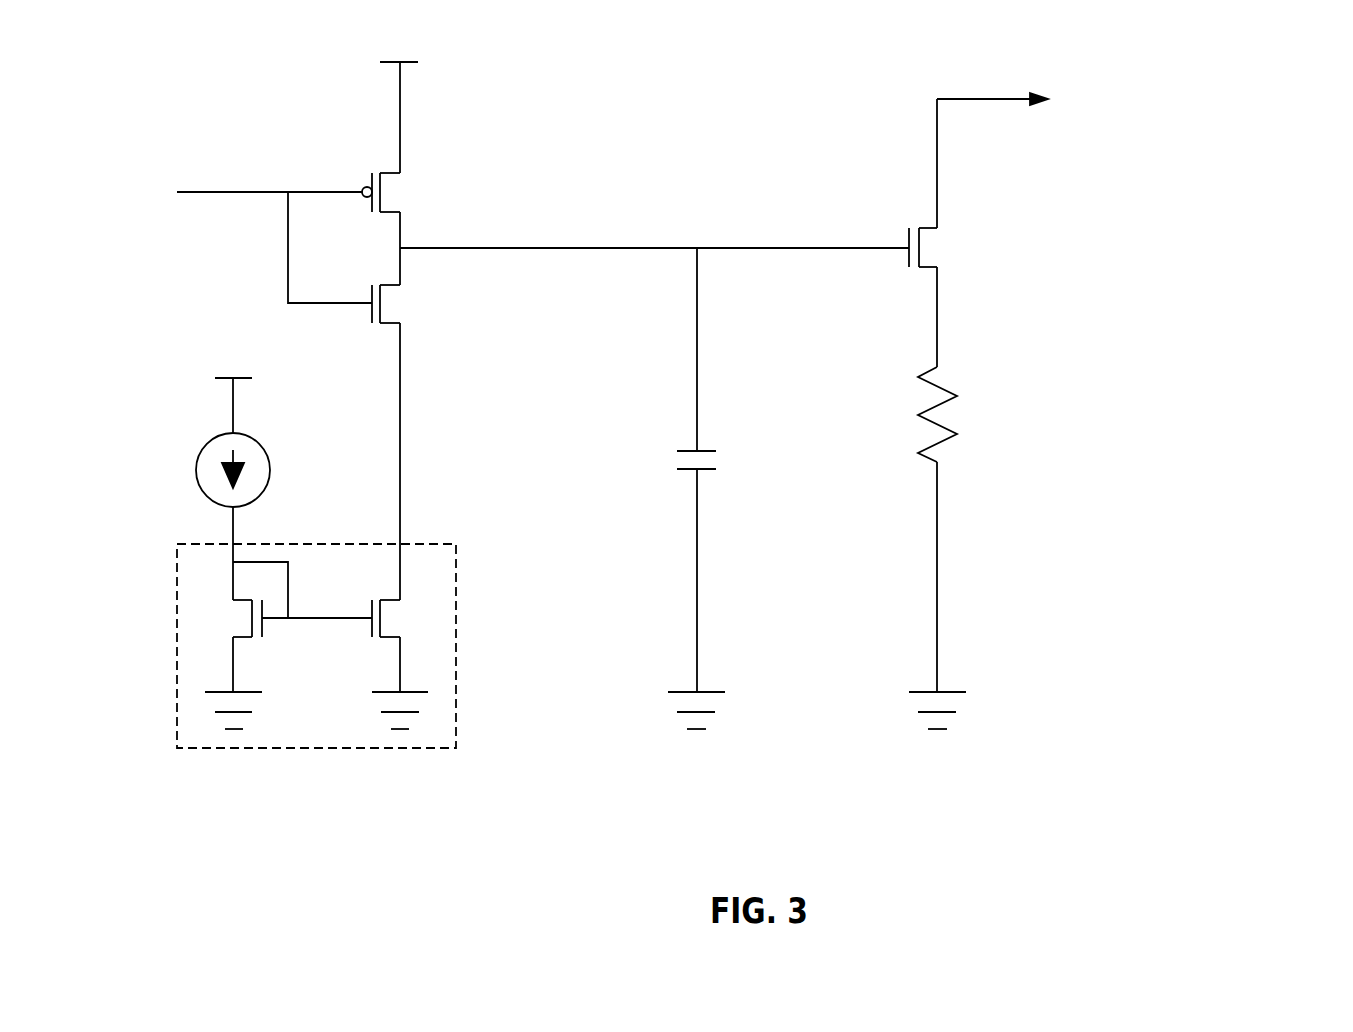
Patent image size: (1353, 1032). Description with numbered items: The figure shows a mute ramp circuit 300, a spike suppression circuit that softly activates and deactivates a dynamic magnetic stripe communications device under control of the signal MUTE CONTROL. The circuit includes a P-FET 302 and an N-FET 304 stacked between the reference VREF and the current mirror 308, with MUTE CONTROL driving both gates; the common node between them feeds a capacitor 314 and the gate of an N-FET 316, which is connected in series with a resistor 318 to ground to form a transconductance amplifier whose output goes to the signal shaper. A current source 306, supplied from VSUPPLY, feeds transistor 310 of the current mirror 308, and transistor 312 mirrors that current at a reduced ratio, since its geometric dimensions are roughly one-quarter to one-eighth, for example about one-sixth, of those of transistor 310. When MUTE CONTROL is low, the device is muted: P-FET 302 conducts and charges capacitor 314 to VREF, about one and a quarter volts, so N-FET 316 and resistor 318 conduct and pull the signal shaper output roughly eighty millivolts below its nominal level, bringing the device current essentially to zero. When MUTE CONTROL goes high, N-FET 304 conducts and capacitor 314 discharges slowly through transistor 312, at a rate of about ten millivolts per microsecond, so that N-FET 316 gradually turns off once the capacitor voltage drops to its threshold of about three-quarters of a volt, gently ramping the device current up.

The mute ramp circuit 300 is at (1323, 409).
The P-FET 302 is at (395, 173).
The N-FET 304 is at (387, 283).
The current source 306 is at (203, 447).
The current mirror 308 is at (370, 544).
The transistor 310 is at (244, 635).
The transistor 312 is at (385, 598).
The capacitor 314 is at (677, 450).
The N-FET 316 is at (925, 226).
The resistor 318 is at (930, 367).